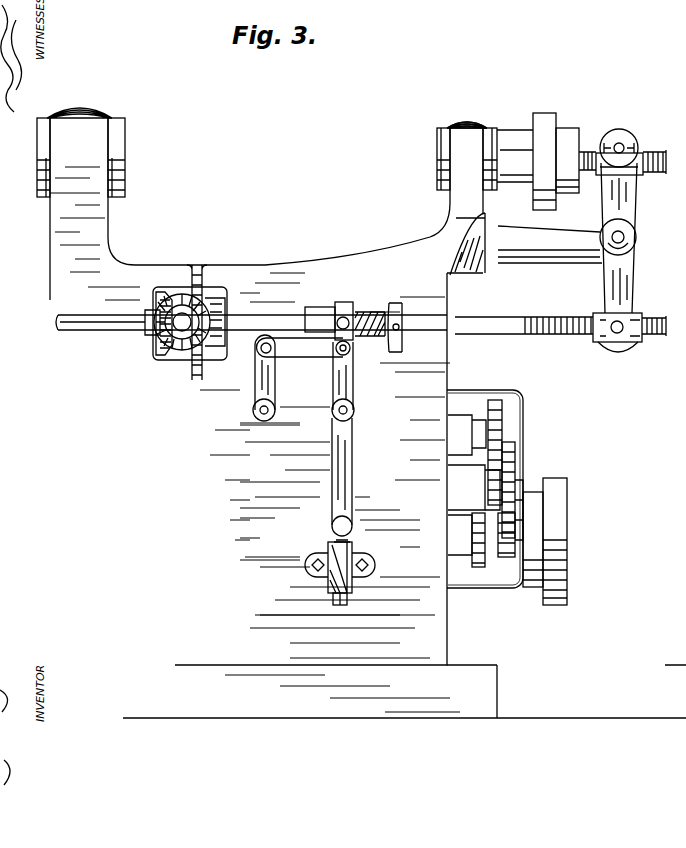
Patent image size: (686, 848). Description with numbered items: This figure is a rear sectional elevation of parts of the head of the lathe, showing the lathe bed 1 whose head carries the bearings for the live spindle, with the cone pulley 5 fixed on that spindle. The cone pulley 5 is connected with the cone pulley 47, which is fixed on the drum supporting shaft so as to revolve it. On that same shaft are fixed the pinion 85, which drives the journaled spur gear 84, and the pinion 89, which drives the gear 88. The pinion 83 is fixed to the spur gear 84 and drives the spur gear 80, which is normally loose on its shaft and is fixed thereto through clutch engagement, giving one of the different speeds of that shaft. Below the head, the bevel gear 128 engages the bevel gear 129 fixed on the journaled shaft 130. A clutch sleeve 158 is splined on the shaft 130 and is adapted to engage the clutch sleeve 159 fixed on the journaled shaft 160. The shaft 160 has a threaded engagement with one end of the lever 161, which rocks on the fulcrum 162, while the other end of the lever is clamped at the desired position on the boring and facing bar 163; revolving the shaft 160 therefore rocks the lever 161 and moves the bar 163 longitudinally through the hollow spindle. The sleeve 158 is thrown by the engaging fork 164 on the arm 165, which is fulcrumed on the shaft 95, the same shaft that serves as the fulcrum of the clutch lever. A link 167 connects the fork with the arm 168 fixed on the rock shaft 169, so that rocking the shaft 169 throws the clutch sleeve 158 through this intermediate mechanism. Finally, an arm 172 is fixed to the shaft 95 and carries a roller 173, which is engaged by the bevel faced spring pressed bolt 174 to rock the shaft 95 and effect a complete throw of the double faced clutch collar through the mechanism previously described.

The lathe bed 1 is at (269, 262).
The cone pulley 5 is at (565, 128).
The boring and facing bar 163 is at (645, 140).
The fulcrum 162 is at (625, 237).
The lever 161 is at (622, 292).
The journaled shaft 160 is at (530, 318).
The journaled shaft 130 is at (102, 338).
The bevel gear 129 is at (157, 350).
The bevel gear 128 is at (186, 350).
The clutch sleeve 158 is at (318, 307).
The engaging fork 164 is at (350, 302).
The clutch sleeve 159 is at (400, 310).
The link 167 is at (300, 360).
The arm 168 is at (255, 384).
The rock shaft 169 is at (253, 414).
The arm 165 is at (348, 390).
The shaft 95 is at (354, 410).
The arm 172 is at (346, 482).
The roller 173 is at (330, 526).
The bevel faced spring pressed bolt 174 is at (330, 540).
The spur gear 80 is at (500, 408).
The gear 88 is at (492, 450).
The pinion 83 is at (500, 470).
The spur gear 84 is at (520, 488).
The pinion 89 is at (477, 567).
The pinion 85 is at (508, 560).
The cone pulley 47 is at (552, 523).